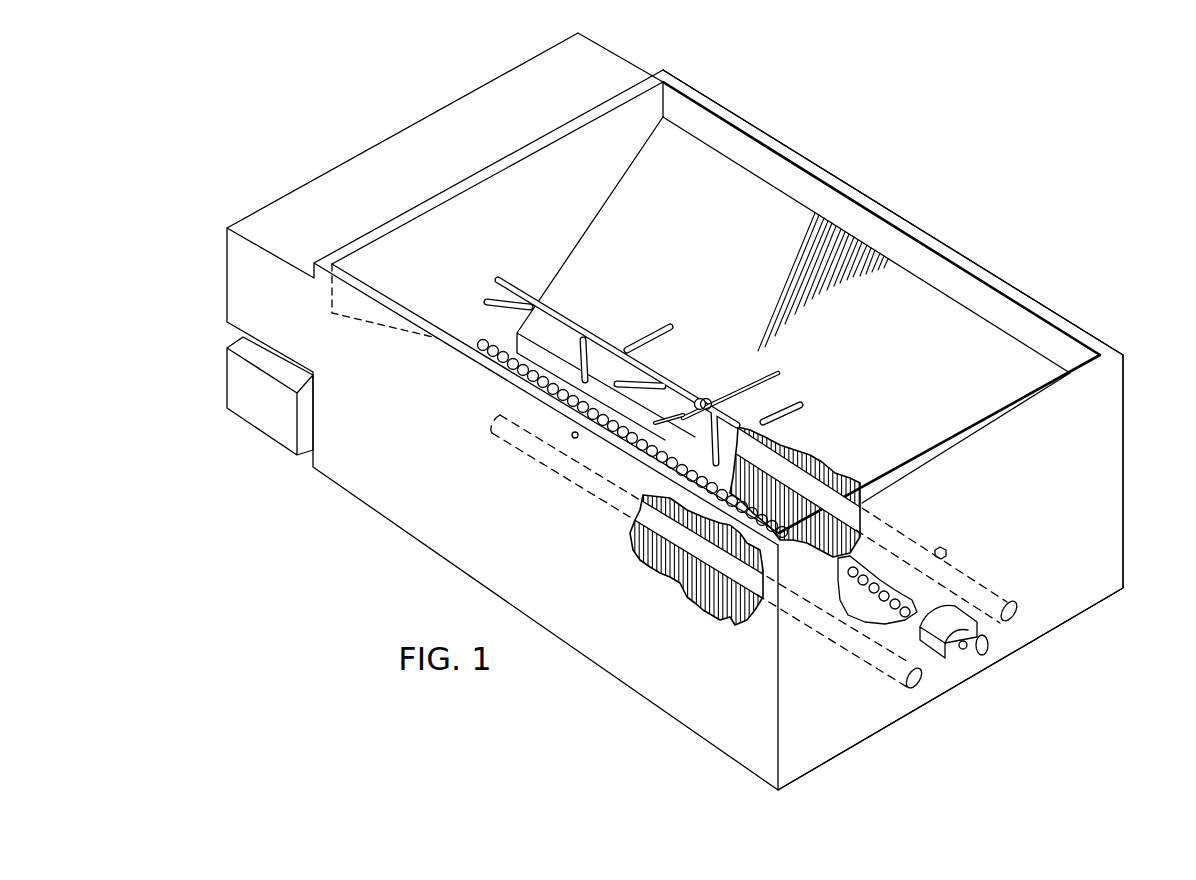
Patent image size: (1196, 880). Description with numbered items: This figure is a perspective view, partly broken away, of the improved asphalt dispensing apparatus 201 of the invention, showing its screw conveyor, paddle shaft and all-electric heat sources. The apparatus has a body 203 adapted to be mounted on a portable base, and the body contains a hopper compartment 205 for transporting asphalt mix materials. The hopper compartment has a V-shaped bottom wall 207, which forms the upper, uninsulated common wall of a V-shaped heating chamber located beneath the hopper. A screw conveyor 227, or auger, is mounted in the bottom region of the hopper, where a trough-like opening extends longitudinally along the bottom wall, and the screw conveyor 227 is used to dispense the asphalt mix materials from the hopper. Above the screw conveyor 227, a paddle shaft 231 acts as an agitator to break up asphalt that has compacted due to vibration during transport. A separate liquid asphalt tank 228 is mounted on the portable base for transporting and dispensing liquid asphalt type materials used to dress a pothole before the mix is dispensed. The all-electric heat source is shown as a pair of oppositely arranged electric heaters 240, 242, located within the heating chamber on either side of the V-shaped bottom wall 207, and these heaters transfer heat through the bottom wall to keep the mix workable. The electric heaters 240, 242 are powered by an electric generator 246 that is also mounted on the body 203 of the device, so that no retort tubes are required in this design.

The asphalt dispensing apparatus 201 is at (1032, 140).
The body 203 is at (1127, 470).
The hopper compartment 205 is at (1030, 327).
The V-shaped bottom wall 207 is at (717, 167).
The screw conveyor 227 is at (888, 572).
The liquid asphalt tank 228 is at (402, 137).
The paddle shaft 231 is at (580, 332).
The electric heater 240 is at (863, 665).
The electric heater 242 is at (977, 580).
The electric generator 246 is at (235, 377).